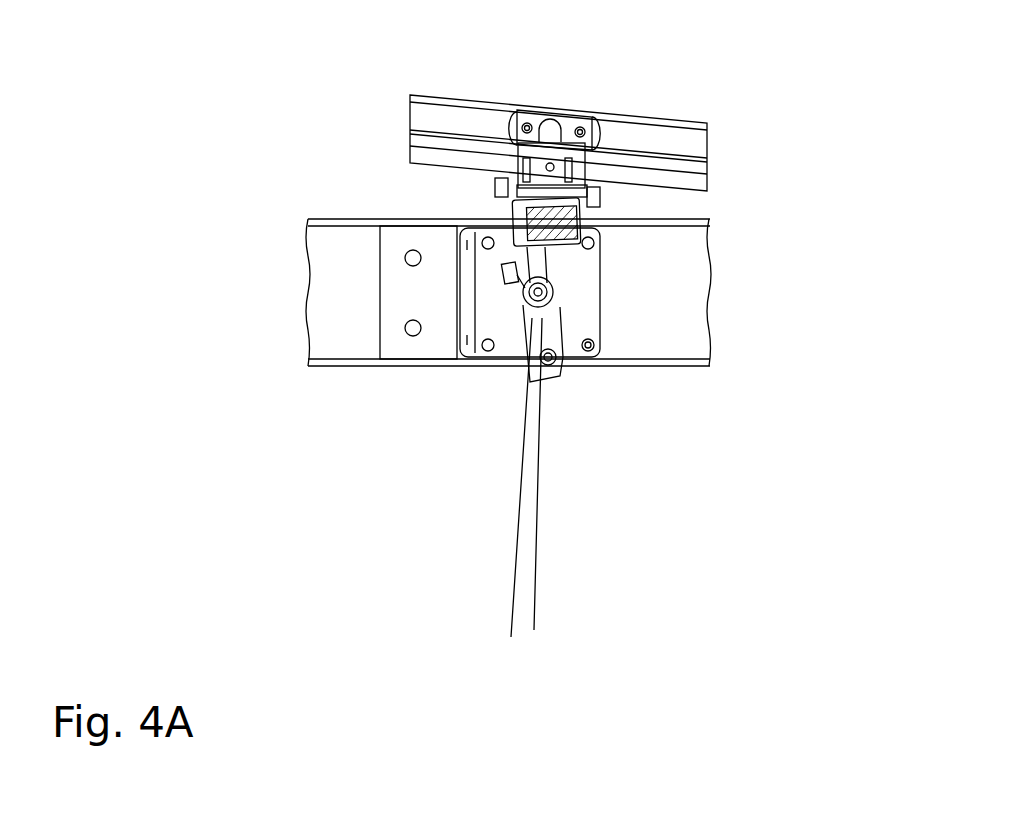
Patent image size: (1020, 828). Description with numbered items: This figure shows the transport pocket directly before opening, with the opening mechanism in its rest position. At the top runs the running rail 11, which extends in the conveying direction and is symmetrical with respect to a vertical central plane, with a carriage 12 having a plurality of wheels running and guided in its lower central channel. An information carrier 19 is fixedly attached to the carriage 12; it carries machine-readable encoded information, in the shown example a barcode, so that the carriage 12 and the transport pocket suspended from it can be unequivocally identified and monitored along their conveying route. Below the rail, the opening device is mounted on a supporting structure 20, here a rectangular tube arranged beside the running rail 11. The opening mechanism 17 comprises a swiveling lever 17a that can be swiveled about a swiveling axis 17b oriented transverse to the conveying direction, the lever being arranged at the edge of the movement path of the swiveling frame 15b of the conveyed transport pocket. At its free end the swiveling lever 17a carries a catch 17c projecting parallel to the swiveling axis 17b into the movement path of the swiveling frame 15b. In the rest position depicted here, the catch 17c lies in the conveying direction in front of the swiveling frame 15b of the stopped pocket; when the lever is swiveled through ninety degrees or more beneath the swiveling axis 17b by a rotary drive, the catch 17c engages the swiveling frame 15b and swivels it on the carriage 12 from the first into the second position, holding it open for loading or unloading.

The running rail 11 is at (392, 87).
The carriage 12 is at (552, 147).
The swiveling frame 15b is at (532, 432).
The opening mechanism 17 is at (498, 347).
The swiveling lever 17a is at (550, 328).
The swiveling axis 17b is at (533, 290).
The catch 17c is at (556, 358).
The information carrier 19 is at (577, 218).
The supporting structure 20 is at (690, 277).